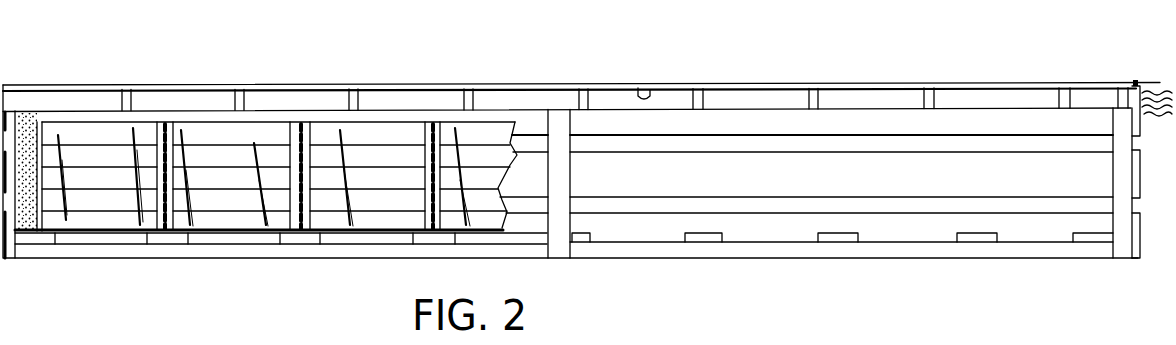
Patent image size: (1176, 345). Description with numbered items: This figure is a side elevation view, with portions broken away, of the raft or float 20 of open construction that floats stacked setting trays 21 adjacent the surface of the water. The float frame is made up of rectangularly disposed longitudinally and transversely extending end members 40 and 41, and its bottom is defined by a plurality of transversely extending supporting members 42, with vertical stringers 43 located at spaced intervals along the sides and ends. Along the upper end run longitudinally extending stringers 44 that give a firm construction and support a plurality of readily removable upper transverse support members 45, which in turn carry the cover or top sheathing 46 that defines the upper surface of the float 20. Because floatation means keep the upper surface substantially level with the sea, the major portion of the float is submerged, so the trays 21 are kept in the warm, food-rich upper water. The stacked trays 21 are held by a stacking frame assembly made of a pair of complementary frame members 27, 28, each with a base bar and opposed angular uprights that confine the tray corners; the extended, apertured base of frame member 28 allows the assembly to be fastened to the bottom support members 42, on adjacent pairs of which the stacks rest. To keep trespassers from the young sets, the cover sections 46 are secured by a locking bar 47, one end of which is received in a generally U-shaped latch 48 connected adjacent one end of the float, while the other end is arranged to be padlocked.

The raft or float 20 is at (784, 46).
The setting trays 21 is at (227, 132).
The frame member 27 is at (35, 128).
The frame member 28 is at (157, 123).
The longitudinally extending end members 40 is at (857, 187).
The transversely extending end members 41 is at (1142, 120).
The transversely extending supporting members 42 is at (152, 237).
The vertical stringers 43 is at (557, 165).
The longitudinally extending stringers 44 is at (283, 100).
The upper transverse support members 45 is at (118, 102).
The cover or top sheathing 46 is at (644, 97).
The locking bar 47 is at (557, 82).
The U-shaped latch 48 is at (1137, 80).